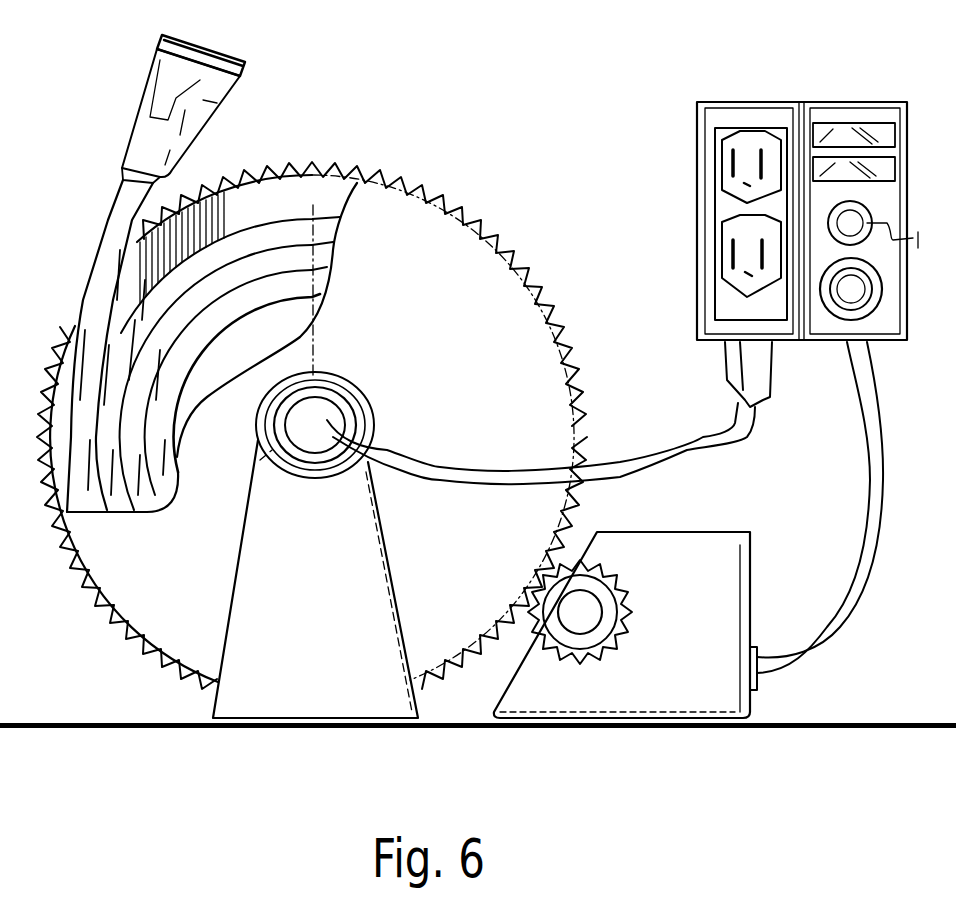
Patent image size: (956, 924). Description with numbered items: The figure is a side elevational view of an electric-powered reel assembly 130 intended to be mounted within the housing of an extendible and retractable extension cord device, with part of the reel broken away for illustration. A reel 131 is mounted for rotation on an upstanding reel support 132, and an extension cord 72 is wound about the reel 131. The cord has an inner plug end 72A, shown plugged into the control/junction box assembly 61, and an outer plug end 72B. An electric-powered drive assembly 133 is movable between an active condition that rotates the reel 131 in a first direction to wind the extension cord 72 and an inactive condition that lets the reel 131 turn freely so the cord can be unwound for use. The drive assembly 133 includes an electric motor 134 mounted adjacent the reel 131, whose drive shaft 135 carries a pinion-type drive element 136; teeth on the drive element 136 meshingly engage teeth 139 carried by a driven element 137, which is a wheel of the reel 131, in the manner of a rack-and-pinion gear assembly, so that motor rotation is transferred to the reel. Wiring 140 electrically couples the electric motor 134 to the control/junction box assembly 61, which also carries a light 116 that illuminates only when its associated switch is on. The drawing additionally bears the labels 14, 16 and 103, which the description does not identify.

The control/junction box assembly 61 is at (810, 83).
The light 116 is at (840, 134).
The indicator 14 is at (866, 161).
The control knob 16 is at (860, 303).
The electrical outlets 103 is at (727, 303).
The extension cord 72 is at (110, 213).
The inner plug end 72A is at (762, 368).
The outer plug end 72B is at (200, 107).
The electric-powered reel assembly 130 is at (483, 171).
The reel 131 is at (280, 200).
The reel support 132 is at (300, 670).
The electric-powered drive assembly 133 is at (613, 577).
The electric motor 134 is at (712, 550).
The drive shaft 135 is at (580, 607).
The drive element 136 is at (580, 623).
The driven element 137 is at (463, 267).
The teeth 139 is at (533, 290).
The wiring 140 is at (851, 550).